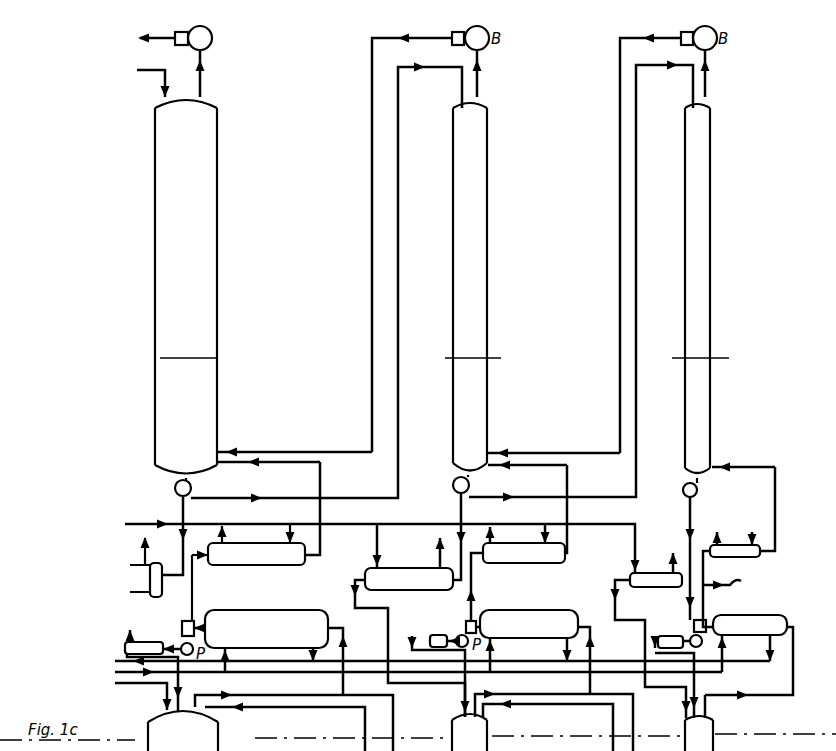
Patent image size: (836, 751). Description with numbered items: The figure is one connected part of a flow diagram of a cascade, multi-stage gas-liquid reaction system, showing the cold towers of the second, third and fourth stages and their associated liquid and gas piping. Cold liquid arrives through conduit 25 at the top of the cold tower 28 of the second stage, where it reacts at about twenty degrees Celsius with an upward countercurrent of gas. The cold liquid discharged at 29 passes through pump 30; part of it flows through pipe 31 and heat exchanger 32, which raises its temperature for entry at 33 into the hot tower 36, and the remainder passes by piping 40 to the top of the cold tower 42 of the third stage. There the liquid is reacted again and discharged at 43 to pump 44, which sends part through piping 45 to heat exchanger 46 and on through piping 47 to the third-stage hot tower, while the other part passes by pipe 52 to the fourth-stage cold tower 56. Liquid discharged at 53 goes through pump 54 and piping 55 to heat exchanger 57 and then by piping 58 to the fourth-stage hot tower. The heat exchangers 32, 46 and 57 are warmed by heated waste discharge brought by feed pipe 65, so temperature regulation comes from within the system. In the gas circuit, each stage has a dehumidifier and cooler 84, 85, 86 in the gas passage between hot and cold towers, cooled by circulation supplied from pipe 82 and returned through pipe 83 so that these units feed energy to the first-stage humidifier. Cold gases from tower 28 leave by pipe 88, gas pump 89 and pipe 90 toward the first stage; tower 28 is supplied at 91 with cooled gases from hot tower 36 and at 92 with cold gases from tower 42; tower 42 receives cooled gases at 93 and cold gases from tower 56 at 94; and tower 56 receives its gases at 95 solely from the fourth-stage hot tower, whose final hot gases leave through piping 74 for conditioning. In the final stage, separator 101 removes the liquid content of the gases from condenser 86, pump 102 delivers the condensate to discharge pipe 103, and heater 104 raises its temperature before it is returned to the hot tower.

The conduit 25 is at (147, 83).
The cold tower 28 is at (205, 151).
The cold liquid discharge 29 is at (176, 482).
The pump 30 is at (178, 491).
The pipe 31 is at (188, 510).
The heat exchanger 32 is at (153, 565).
The entry 33 is at (143, 697).
The hot tower 36 is at (217, 741).
The piping 40 is at (398, 430).
The cold tower 42 is at (488, 273).
The discharge 43 is at (455, 472).
The pump 44 is at (455, 490).
The piping 45 is at (466, 511).
The heat exchanger 46 is at (422, 588).
The piping 47 is at (390, 633).
The pipe 52 is at (580, 500).
The discharge 53 is at (684, 474).
The pump 54 is at (684, 495).
The piping 55 is at (694, 512).
The cold tower 56 is at (712, 247).
The heat exchanger 57 is at (640, 574).
The piping 58 is at (618, 603).
The feed pipe 65 is at (382, 547).
The piping 74 is at (750, 698).
The pipe 82 is at (362, 673).
The pipe 83 is at (364, 660).
The dehumidifier and cooler 84 is at (235, 620).
The dehumidifier and cooler 85 is at (535, 610).
The dehumidifier and cooler 86 is at (742, 636).
The pipe 88 is at (205, 79).
The gas pump 89 is at (211, 45).
The pipe 90 is at (156, 48).
The cooled gas supply point 91 is at (219, 463).
The cold gas supply point 92 is at (219, 452).
The cooled gas supply point 93 is at (494, 463).
The cold gas supply point 94 is at (492, 451).
The gas supply point 95 is at (716, 465).
The separator 101 is at (706, 622).
The pump 102 is at (698, 647).
The discharge pipe 103 is at (688, 607).
The heater 104 is at (675, 677).